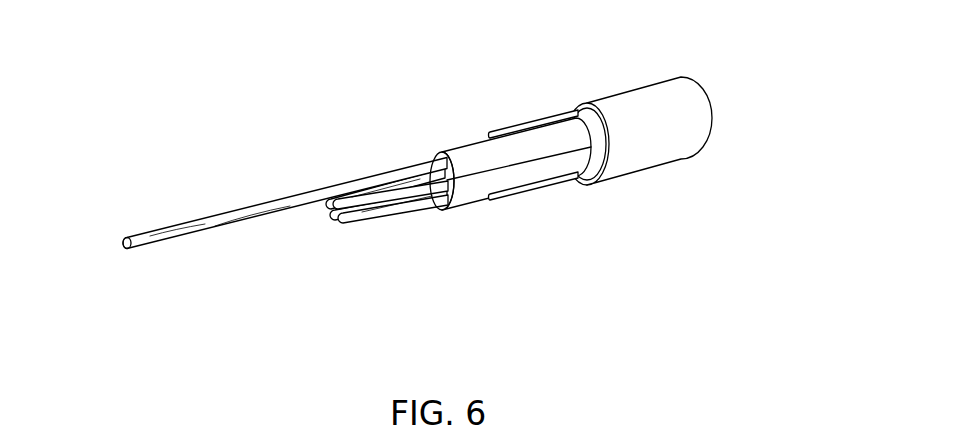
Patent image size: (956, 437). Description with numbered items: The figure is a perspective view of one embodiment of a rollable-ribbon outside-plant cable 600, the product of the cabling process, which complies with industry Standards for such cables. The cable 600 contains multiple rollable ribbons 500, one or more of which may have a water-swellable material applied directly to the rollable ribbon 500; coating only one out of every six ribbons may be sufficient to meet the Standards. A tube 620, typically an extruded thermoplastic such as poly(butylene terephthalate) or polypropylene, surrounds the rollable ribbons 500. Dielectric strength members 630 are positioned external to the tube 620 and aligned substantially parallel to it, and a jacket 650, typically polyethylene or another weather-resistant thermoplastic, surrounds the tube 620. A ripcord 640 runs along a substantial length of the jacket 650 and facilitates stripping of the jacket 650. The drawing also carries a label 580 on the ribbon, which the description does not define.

The rollable-ribbon OSP cable 600 is at (138, 63).
The rollable ribbon 500 is at (163, 228).
The stranded fiber bundle 580 is at (254, 221).
The tube 620 is at (452, 152).
The dielectric strength members 630 is at (533, 247).
The ripcord 640 is at (560, 181).
The jacket 650 is at (663, 163).